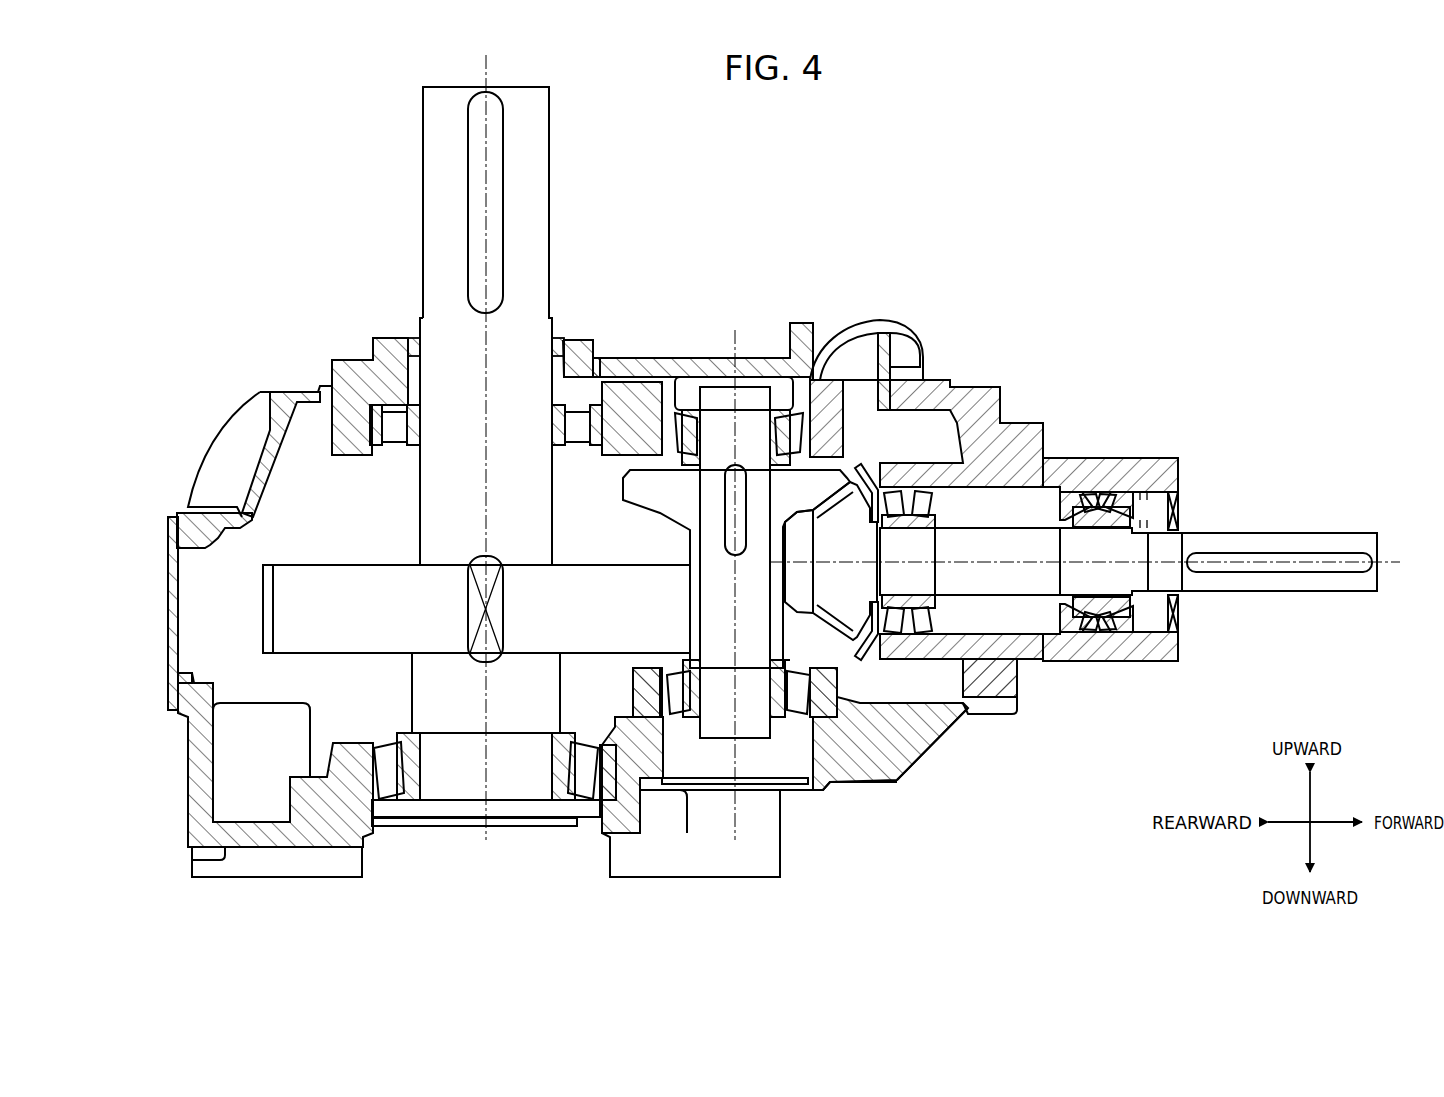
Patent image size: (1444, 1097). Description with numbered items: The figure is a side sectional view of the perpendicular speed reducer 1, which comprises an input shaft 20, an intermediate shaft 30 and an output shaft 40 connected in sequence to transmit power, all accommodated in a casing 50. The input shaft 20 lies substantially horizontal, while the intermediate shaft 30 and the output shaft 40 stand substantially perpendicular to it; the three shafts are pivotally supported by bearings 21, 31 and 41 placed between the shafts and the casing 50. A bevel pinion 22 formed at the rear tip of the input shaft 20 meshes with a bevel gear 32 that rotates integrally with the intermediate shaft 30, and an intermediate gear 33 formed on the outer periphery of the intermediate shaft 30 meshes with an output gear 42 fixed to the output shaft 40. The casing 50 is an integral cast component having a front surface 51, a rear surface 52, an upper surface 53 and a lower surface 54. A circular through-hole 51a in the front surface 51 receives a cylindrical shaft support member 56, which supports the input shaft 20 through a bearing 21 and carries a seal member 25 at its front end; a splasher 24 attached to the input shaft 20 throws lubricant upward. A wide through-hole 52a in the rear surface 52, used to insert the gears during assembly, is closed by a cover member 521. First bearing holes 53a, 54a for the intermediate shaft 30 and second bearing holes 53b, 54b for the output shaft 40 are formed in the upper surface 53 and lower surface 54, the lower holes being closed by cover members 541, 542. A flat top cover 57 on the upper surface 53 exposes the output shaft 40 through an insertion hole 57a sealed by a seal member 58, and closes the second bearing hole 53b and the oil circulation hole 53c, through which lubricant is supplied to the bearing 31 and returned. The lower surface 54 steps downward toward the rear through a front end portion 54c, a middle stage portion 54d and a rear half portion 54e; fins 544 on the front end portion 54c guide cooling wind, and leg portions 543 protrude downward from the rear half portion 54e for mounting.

The perpendicular speed reducer 1 is at (893, 172).
The input shaft 20 is at (1283, 591).
The bearings 21 is at (908, 640).
The bevel pinion 22 is at (836, 632).
The splasher 24 is at (879, 465).
The seal member 25 is at (1180, 515).
The intermediate shaft 30 is at (752, 386).
The bearings 31 is at (796, 380).
The bevel gear 32 is at (645, 470).
The intermediate gear 33 is at (784, 608).
The output shaft 40 is at (423, 163).
The bearings 41 is at (362, 418).
The output gear 42 is at (290, 562).
The casing 50 is at (234, 415).
The front surface 51 is at (1005, 400).
The through-hole 51a is at (1000, 652).
The rear surface 52 is at (188, 778).
The through-hole 52a is at (178, 676).
The cover member 521 is at (166, 613).
The upper surface 53 is at (345, 392).
The first bearing hole 53a is at (690, 384).
The second bearing hole 53b is at (572, 365).
The oil circulation hole 53c is at (804, 422).
The lower surface 54 is at (823, 810).
The first bearing hole 54a is at (770, 792).
The second bearing hole 54b is at (460, 808).
The front end portion 54c is at (996, 714).
The middle stage portion 54d is at (797, 792).
The rear half portion 54e is at (620, 843).
The cover member 541 is at (724, 786).
The cover member 542 is at (520, 827).
The leg portions 543 is at (262, 878).
The fins 544 is at (935, 757).
The shaft support member 56 is at (1093, 458).
The top cover 57 is at (716, 379).
The insertion hole 57a is at (563, 345).
The seal member 58 is at (418, 345).